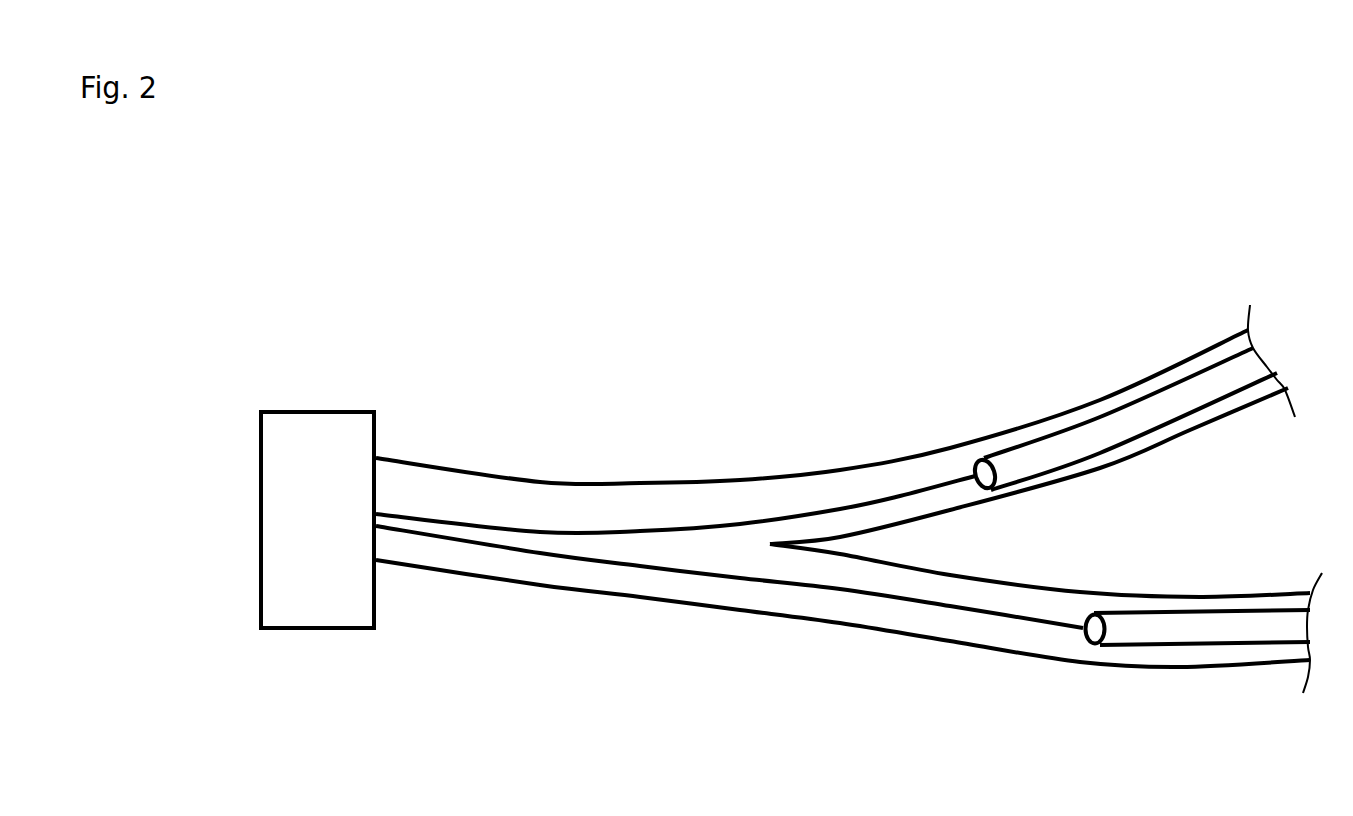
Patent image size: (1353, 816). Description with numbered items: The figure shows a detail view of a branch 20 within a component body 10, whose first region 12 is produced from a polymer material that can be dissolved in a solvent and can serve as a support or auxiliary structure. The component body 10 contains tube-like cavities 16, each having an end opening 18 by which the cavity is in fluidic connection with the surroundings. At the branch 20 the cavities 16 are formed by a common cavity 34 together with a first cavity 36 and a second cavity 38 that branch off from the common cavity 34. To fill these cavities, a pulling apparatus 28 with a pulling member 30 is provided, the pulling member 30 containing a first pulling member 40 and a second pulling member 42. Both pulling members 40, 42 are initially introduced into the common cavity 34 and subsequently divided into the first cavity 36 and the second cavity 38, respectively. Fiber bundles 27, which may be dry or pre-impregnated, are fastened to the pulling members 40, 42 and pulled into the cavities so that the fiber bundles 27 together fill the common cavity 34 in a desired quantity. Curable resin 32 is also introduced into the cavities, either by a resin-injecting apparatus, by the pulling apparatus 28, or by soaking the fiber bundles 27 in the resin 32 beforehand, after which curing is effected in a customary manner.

The component body 10 is at (419, 307).
The first region 12 is at (555, 482).
The tube-like cavities 16 is at (457, 483).
The end opening 18 is at (375, 496).
The branch 20 is at (841, 360).
The fiber bundles 27 is at (1138, 418).
The pulling apparatus 28 is at (287, 428).
The pulling member 30 is at (447, 590).
The curable resin 32 is at (647, 512).
The common cavity 34 is at (732, 495).
The first cavity 36 is at (1060, 423).
The second cavity 38 is at (967, 633).
The first pulling member 40 is at (890, 497).
The second pulling member 42 is at (848, 593).